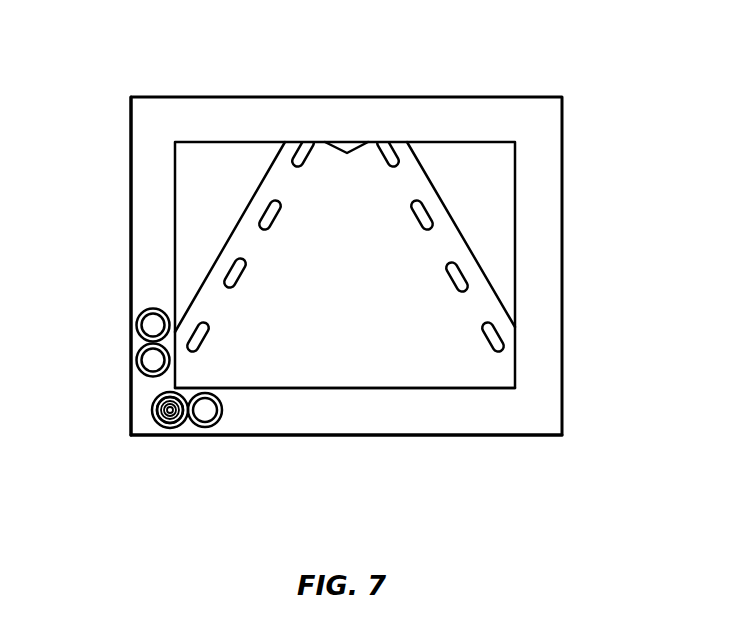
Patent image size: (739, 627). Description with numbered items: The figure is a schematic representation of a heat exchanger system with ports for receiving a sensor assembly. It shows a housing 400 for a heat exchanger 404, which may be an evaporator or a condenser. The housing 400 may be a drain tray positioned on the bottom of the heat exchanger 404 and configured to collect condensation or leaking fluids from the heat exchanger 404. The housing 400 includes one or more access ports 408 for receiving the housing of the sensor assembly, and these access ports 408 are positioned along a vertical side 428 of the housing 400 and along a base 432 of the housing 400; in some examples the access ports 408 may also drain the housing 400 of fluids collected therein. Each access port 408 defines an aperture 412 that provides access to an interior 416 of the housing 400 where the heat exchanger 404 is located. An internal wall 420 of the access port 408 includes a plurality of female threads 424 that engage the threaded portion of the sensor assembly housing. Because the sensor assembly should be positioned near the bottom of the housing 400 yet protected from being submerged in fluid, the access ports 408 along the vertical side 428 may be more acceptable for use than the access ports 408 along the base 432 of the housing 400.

The housing 400 is at (500, 92).
The heat exchanger 404 is at (460, 219).
The access ports 408 is at (135, 328).
The aperture 412 is at (178, 399).
The interior 416 is at (197, 240).
The internal wall 420 is at (157, 418).
The female threads 424 is at (170, 420).
The vertical side 428 is at (142, 170).
The base 432 is at (475, 439).